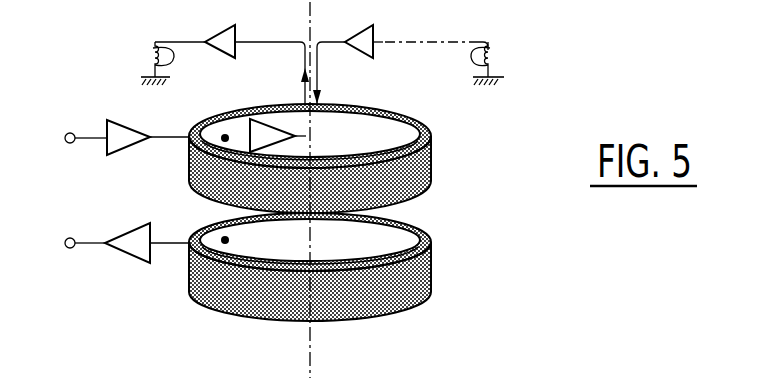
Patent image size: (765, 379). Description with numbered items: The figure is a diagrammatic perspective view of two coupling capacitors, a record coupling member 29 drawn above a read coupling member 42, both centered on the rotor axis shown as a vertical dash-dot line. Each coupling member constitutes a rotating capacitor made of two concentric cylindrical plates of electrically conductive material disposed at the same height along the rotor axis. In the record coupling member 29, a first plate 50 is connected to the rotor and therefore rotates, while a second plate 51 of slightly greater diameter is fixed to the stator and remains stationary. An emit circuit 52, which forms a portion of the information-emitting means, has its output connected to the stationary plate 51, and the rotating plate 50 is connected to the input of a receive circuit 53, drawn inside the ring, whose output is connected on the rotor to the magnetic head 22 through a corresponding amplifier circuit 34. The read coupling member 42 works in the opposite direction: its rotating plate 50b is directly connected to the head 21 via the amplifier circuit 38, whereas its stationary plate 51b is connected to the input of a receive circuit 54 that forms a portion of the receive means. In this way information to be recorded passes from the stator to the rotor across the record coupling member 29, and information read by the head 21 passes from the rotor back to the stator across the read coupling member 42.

The head 21 is at (503, 46).
The magnetic head 22 is at (140, 48).
The record coupling member 29 is at (322, 145).
The amplifier circuit 34 is at (222, 25).
The amplifier circuit 38 is at (351, 39).
The read coupling member 42 is at (346, 285).
The first plate 50 is at (405, 126).
The second plate 51 is at (428, 165).
The rotating plate 50b is at (405, 232).
The stationary plate 51b is at (428, 273).
The emit circuit 52 is at (125, 146).
The receive circuit 53 is at (265, 118).
The receive circuit 54 is at (134, 248).